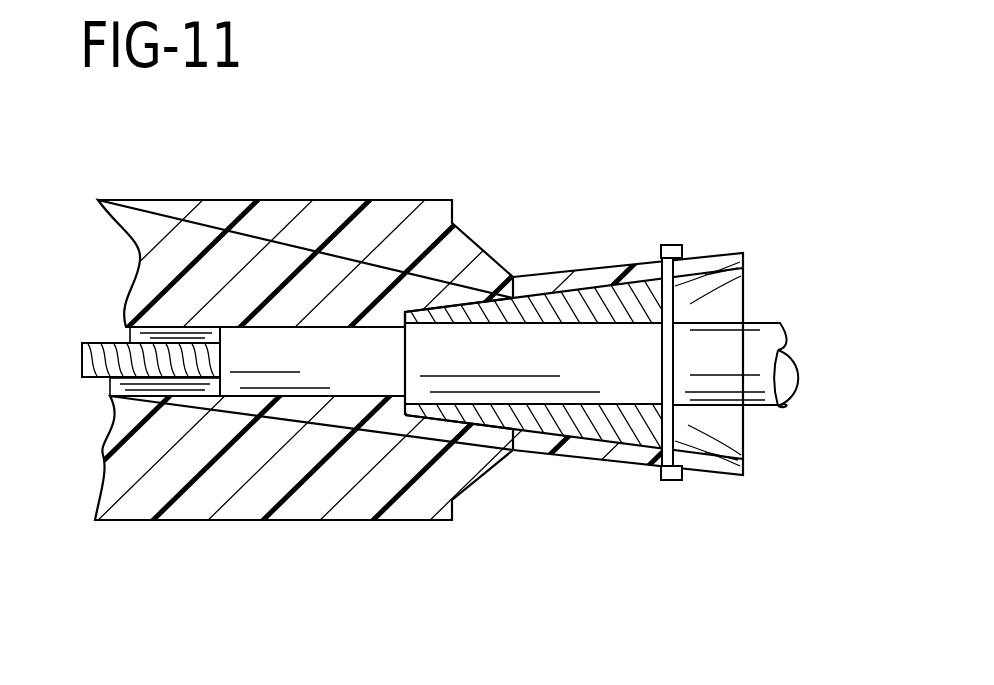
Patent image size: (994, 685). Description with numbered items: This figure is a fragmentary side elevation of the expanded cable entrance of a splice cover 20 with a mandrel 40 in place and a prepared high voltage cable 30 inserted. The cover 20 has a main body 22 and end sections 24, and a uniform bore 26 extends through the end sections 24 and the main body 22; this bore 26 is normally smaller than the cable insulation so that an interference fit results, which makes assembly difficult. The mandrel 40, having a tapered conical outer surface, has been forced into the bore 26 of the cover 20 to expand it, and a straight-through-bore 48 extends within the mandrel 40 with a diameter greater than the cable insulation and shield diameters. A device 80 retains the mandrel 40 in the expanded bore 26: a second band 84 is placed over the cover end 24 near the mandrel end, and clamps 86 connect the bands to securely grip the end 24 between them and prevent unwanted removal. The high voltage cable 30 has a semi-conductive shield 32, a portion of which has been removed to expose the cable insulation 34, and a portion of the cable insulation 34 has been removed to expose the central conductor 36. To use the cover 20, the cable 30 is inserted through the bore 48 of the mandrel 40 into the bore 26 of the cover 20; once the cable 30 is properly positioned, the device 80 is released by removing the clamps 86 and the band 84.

The splice insulation or cover 20 is at (190, 575).
The main body 22 is at (316, 522).
The end sections 24 is at (630, 462).
The uniform bore 26 is at (172, 342).
The high voltage cable 30 is at (775, 415).
The semi-conductive shield 32 is at (712, 350).
The cable insulation 34 is at (300, 345).
The central conductor 36 is at (132, 346).
The mandrel 40 is at (560, 270).
The straight-through-bore 48 is at (596, 428).
The device 80 is at (700, 260).
The second band 84 is at (712, 432).
The clamps 86 is at (672, 244).